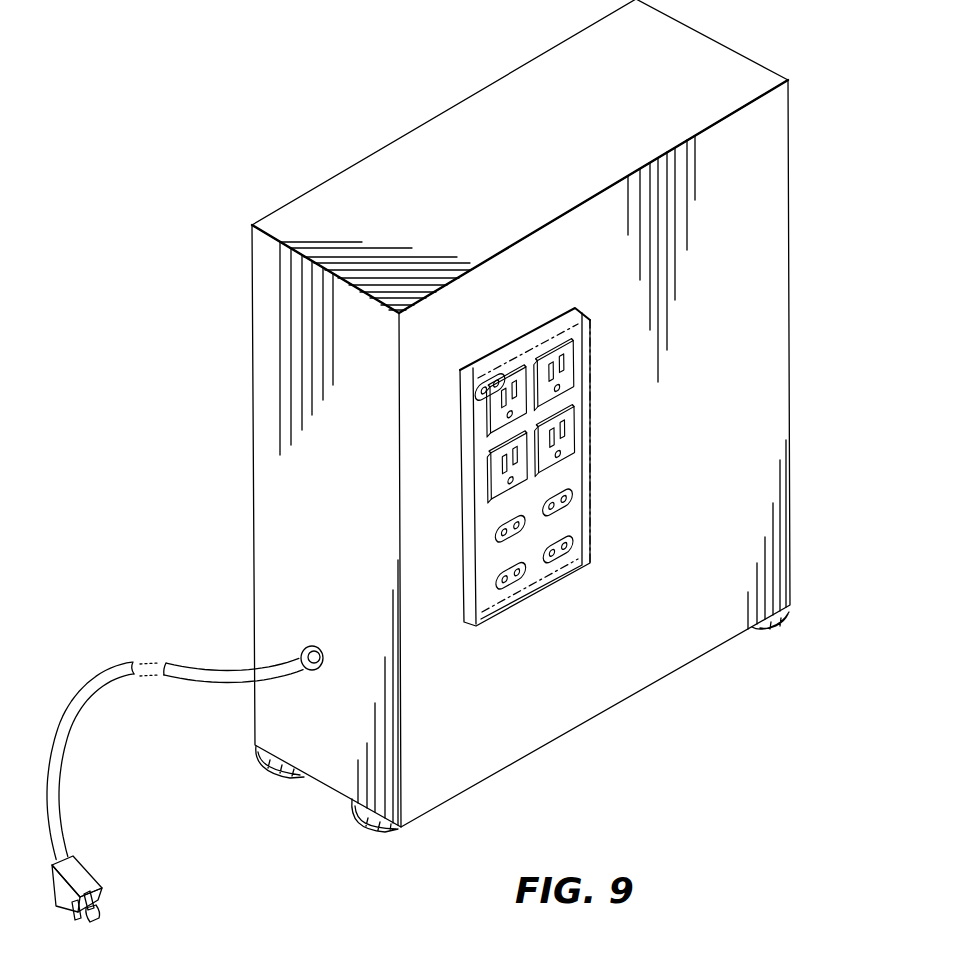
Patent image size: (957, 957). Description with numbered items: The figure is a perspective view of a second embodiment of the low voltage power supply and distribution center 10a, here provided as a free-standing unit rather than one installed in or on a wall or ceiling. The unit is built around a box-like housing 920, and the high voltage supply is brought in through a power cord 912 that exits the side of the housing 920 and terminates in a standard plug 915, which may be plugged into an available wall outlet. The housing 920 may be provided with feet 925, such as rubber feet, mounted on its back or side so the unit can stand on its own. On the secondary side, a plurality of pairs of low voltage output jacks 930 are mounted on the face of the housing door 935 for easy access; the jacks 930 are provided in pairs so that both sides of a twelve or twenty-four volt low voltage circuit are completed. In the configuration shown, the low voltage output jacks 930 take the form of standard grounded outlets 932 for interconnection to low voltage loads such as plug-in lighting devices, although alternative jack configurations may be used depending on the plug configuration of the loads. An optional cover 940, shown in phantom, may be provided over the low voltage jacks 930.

The low voltage power supply and distribution center 10a is at (808, 278).
The housing 920 is at (514, 110).
The housing door 935 is at (713, 487).
The low voltage output jacks 930 is at (456, 591).
The cover 940 is at (560, 582).
The standard grounded outlets 932 is at (556, 372).
The feet 925 is at (364, 826).
The power cord 912 is at (97, 706).
The standard plug 915 is at (95, 876).